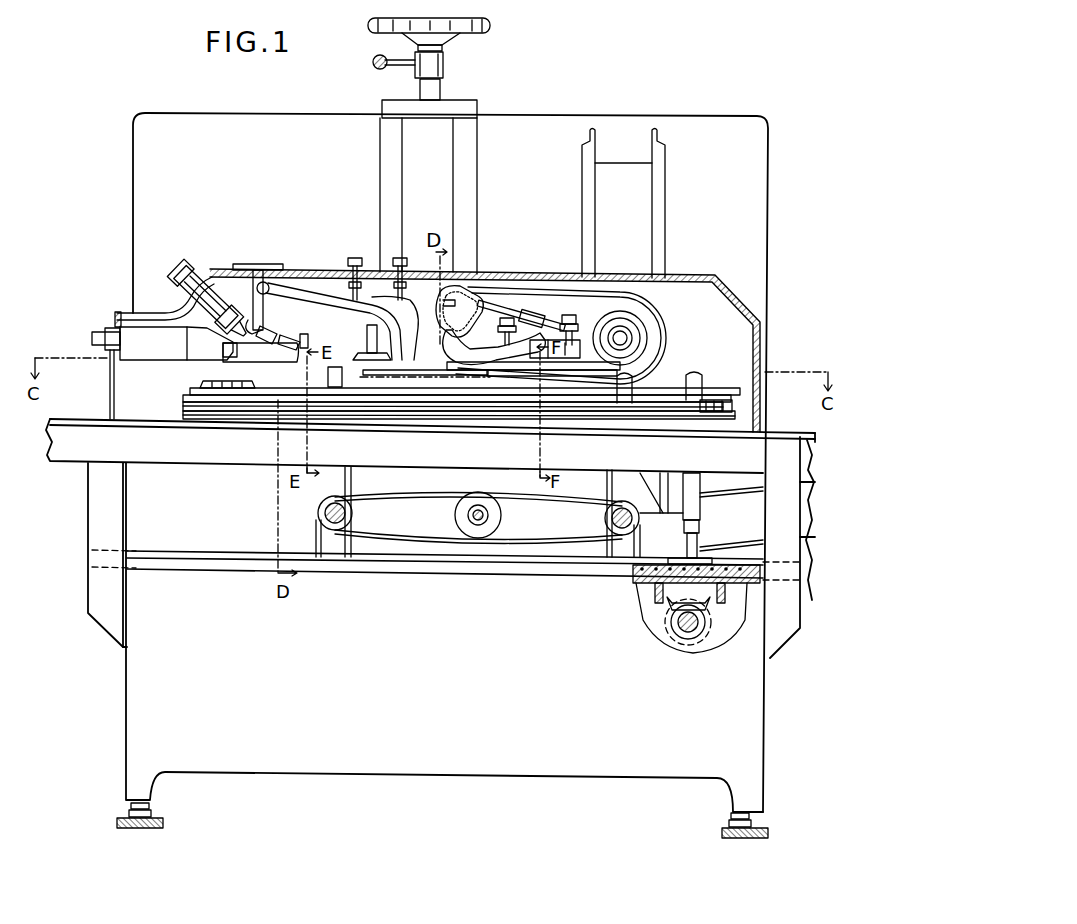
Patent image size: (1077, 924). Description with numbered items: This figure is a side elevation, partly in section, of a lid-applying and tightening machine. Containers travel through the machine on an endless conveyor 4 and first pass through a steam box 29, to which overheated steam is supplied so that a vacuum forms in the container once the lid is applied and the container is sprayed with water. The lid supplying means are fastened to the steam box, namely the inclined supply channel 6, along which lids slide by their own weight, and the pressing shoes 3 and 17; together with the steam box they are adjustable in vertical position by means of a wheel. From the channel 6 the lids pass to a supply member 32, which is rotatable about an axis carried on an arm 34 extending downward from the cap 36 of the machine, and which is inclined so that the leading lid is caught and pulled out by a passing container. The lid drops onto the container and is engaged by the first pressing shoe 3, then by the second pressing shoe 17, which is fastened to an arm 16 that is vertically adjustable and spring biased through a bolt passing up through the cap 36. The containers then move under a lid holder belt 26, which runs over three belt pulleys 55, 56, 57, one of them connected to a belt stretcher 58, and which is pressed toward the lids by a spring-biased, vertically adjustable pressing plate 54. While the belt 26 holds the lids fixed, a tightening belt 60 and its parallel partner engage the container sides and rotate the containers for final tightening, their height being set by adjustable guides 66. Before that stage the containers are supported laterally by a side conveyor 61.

The first pressing shoe 3 is at (333, 300).
The endless conveyor 4 is at (71, 418).
The supply channel 6 is at (196, 272).
The arm 16 is at (385, 320).
The second pressing shoe 17 is at (378, 300).
The lid holder belt 26 is at (503, 302).
The steam box 29 is at (157, 350).
The supply member 32 is at (273, 283).
The arm 34 is at (250, 292).
The cap 36 is at (337, 268).
The pressing plate 54 is at (607, 378).
The belt pulley 55 is at (452, 288).
The belt pulley 56 is at (473, 297).
The belt pulley 57 is at (632, 330).
The belt stretcher 58 is at (547, 302).
The tightening belt 60 is at (254, 412).
The side conveyor 61 is at (216, 402).
The adjustable guide 66 is at (385, 415).